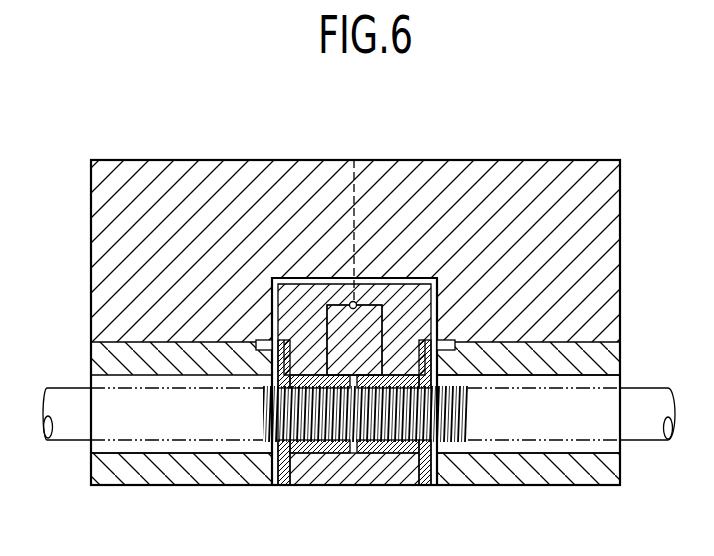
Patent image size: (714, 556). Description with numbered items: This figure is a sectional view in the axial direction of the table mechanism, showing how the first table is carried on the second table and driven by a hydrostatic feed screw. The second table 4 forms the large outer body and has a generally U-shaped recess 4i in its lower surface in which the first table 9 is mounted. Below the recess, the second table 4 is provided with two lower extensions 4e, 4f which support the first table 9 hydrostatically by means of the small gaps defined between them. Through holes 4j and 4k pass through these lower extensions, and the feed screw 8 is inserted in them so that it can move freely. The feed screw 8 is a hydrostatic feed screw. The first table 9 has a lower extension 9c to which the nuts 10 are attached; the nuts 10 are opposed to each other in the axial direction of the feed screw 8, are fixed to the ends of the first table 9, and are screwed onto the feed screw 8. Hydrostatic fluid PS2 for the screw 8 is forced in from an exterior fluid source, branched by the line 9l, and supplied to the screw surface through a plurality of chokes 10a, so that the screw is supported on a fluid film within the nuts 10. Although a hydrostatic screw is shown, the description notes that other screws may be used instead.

The second table 4 is at (108, 224).
The generally U-shaped recess 4i is at (335, 278).
The lower extension 4f is at (143, 470).
The lower extension 4e is at (543, 475).
The through hole 4k is at (100, 447).
The through hole 4j is at (606, 450).
The feed screw 8 is at (75, 400).
The first table 9 is at (437, 306).
The line 9l is at (372, 282).
The lower extension 9c is at (398, 470).
The nuts 10 is at (280, 484).
The chokes 10a is at (305, 448).
The hydrostatic fluids PS2 is at (354, 160).